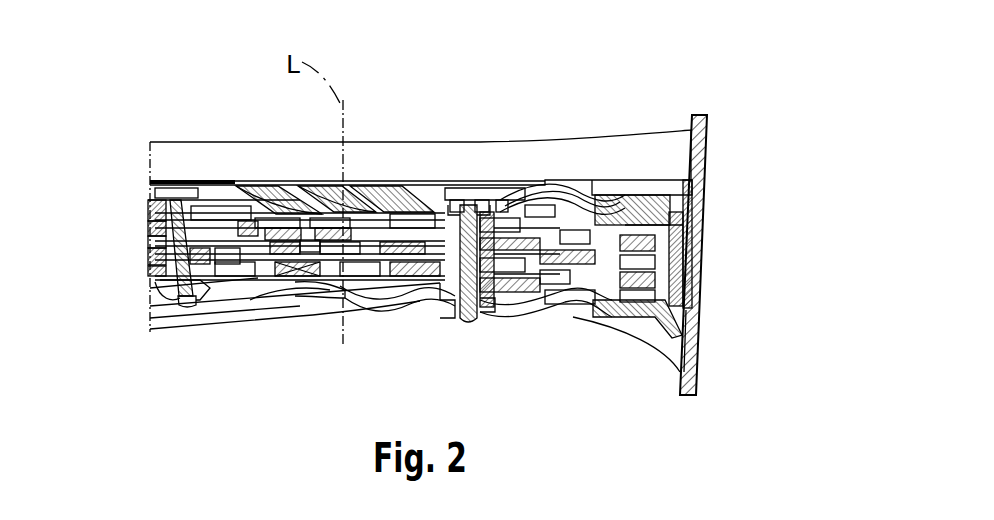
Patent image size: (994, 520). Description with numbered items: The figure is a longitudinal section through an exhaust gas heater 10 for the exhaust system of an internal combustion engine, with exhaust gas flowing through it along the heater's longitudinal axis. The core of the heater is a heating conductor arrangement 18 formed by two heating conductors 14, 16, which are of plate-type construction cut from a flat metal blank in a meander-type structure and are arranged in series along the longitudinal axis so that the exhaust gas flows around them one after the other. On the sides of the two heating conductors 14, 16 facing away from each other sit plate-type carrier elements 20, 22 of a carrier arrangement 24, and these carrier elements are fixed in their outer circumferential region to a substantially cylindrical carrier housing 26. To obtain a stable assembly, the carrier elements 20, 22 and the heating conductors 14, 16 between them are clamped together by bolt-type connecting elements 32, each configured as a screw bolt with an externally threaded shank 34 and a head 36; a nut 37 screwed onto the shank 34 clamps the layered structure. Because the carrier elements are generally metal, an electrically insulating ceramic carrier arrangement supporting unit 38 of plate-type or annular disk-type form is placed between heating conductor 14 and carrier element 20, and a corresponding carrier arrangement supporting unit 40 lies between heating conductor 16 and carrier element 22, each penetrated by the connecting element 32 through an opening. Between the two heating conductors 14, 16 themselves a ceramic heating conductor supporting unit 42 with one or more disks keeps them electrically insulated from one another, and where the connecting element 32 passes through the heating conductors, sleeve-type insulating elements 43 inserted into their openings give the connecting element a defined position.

The exhaust gas heater 10 is at (158, 100).
The heating conductor 14 is at (443, 186).
The heating conductor 16 is at (288, 275).
The heating conductor arrangement 18 is at (372, 184).
The carrier element 20 is at (575, 186).
The carrier element 22 is at (574, 318).
The carrier arrangement 24 is at (200, 160).
The carrier housing 26 is at (707, 204).
The connecting element 32 is at (158, 250).
The externally threaded shank 34 is at (460, 313).
The head 36 is at (467, 186).
The nut 37 is at (488, 316).
The carrier arrangement supporting unit 38 is at (503, 186).
The carrier arrangement supporting unit 40 is at (423, 300).
The heating conductor supporting unit 42 is at (229, 232).
The sleeve-type insulating element 43 is at (157, 273).